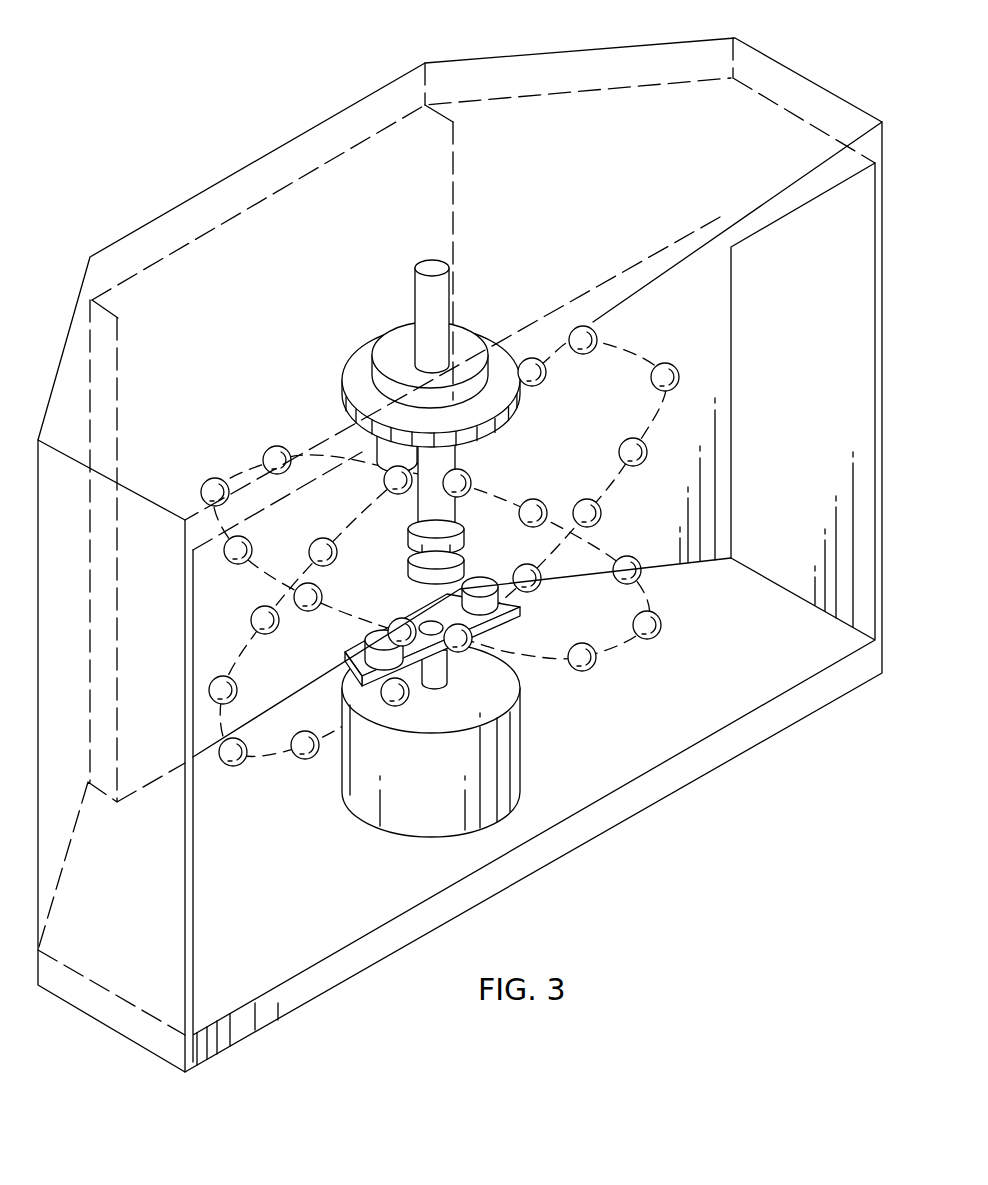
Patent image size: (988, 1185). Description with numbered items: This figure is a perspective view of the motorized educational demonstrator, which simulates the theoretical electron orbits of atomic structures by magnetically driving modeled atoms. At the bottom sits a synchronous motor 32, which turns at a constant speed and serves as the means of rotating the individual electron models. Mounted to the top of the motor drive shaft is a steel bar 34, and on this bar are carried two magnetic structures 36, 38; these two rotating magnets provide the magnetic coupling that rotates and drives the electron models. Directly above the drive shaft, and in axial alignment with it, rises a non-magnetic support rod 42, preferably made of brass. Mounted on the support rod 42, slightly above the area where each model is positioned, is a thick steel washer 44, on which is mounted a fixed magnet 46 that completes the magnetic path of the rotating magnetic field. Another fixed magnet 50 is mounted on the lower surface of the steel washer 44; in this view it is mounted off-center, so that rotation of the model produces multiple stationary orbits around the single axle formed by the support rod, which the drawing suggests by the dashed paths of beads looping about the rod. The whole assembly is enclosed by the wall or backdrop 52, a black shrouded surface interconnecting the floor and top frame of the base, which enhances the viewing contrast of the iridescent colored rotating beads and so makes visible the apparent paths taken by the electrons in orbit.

The synchronous motor 32 is at (375, 783).
The steel bar 34 is at (440, 615).
The magnetic structure 36 is at (378, 639).
The magnetic structure 38 is at (488, 583).
The support rod 42 is at (430, 308).
The steel washer 44 is at (343, 378).
The fixed magnet 46 is at (395, 345).
The fixed magnet 50 is at (390, 457).
The backdrop 52 is at (535, 128).